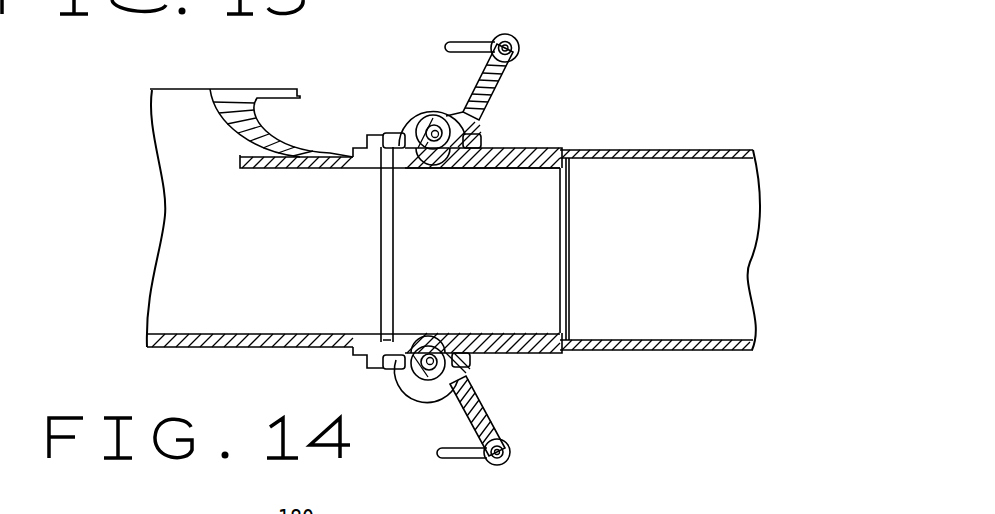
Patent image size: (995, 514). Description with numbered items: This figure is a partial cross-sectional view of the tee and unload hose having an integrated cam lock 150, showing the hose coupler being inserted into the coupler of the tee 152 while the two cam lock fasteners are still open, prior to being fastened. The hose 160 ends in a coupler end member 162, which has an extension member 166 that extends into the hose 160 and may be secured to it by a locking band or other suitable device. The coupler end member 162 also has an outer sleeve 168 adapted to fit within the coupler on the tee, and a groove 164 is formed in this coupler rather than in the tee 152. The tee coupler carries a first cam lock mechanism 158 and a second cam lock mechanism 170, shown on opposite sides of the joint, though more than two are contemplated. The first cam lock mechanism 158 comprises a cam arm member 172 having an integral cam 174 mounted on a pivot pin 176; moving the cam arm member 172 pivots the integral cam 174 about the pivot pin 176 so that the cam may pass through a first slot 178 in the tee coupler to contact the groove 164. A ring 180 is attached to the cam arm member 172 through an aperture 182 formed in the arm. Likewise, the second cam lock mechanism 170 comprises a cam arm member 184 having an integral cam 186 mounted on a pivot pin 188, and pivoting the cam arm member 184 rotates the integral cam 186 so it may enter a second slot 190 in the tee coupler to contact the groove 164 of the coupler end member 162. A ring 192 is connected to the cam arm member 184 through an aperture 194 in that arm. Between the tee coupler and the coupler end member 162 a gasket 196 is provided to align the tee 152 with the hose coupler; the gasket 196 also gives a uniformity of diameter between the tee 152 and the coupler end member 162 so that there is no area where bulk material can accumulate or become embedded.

The tee and unload hose having an integrated cam lock 150 is at (373, 74).
The tee 152 is at (295, 122).
The first cam lock mechanism 158 is at (558, 43).
The hose 160 is at (675, 148).
The coupler end member 162 is at (508, 148).
The groove 164 is at (447, 157).
The extension member 166 is at (547, 170).
The outer sleeve 168 is at (418, 172).
The second cam lock mechanism 170 is at (508, 383).
The cam arm member 172 is at (522, 72).
The integral cam 174 is at (440, 127).
The pivot pin 176 is at (430, 114).
The first slot 178 is at (405, 134).
The ring 180 is at (477, 42).
The aperture 182 is at (512, 38).
The cam arm member 184 is at (490, 412).
The integral cam 186 is at (437, 387).
The pivot pin 188 is at (430, 382).
The second slot 190 is at (408, 373).
The ring 192 is at (467, 459).
The aperture 194 is at (510, 454).
The gasket 196 is at (380, 188).